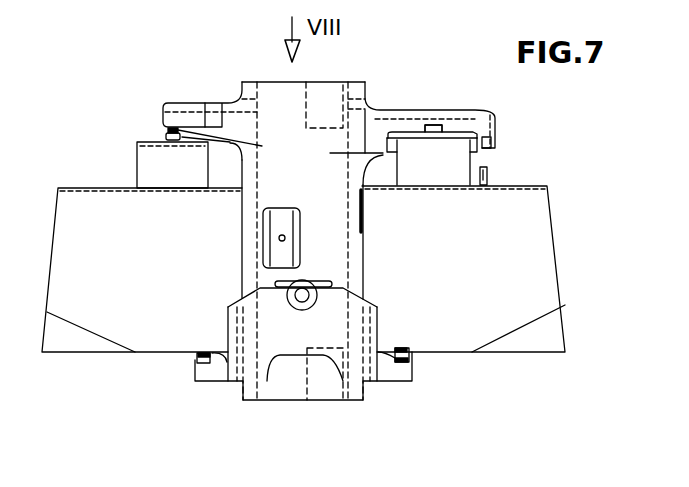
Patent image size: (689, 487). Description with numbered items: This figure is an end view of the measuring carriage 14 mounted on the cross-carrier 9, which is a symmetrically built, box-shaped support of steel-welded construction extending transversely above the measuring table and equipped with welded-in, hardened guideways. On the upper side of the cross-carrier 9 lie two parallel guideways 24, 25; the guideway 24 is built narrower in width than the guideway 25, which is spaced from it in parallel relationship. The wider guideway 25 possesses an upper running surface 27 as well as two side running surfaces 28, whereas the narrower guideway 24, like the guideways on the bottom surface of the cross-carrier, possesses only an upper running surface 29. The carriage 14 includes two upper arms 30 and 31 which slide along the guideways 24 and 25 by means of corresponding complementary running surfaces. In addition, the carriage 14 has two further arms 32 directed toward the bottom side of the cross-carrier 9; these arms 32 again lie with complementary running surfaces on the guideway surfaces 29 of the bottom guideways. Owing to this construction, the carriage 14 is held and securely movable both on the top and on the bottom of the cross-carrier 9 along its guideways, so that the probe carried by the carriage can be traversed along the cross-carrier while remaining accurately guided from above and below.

The cross-carrier 9 is at (533, 247).
The measuring carriage 14 is at (352, 128).
The guideway 24 is at (140, 163).
The guideway 25 is at (452, 167).
The upper running surface 27 is at (437, 124).
The side running surfaces 28 is at (483, 146).
The upper running surface 29 is at (165, 130).
The upper arm 30 is at (192, 103).
The upper arm 31 is at (490, 116).
The further arms 32 is at (223, 378).